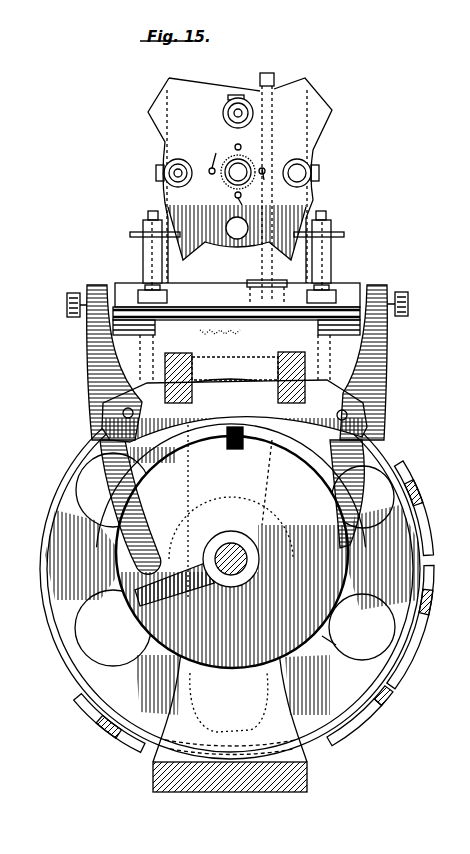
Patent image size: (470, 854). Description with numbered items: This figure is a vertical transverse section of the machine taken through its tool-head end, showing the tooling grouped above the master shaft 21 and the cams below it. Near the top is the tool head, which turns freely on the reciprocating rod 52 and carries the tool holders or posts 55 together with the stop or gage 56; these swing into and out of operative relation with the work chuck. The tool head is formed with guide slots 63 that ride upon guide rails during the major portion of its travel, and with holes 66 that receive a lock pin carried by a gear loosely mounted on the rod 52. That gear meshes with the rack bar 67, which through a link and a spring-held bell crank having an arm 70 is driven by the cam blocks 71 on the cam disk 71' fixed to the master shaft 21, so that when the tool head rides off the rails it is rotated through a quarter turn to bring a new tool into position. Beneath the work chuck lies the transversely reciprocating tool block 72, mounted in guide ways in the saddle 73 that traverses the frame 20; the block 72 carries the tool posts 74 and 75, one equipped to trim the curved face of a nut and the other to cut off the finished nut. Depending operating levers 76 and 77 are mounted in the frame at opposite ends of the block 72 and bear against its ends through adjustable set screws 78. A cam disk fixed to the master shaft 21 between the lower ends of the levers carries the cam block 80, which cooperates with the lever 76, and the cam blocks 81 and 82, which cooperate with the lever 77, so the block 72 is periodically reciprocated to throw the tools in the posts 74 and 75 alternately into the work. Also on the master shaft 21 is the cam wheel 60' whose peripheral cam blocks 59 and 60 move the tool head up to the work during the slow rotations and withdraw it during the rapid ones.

The guide slots 63 is at (169, 103).
The tool holders or posts 55 is at (253, 113).
The holes 66 is at (235, 147).
The reciprocating rod 52 is at (248, 165).
The stop or gage 56 is at (233, 226).
The rack bar 67 is at (262, 268).
The tool post 74 is at (143, 249).
The tool post 75 is at (331, 252).
The tool block 72 is at (350, 292).
The adjustable set screws 78 is at (67, 305).
The saddle 73 is at (246, 358).
The operating lever 76 is at (95, 392).
The operating lever 77 is at (378, 388).
The cam blocks 60 is at (250, 573).
The cam wheel 60' is at (92, 702).
The cam blocks 59 is at (431, 480).
The arm 70 is at (224, 440).
The master shaft 21 is at (238, 548).
The cam block 81 is at (275, 546).
The cam block 80 is at (172, 572).
The cam blocks 71 is at (243, 535).
The cam disk 71' is at (113, 559).
The cam block 82 is at (330, 642).
The frame 20 is at (230, 716).